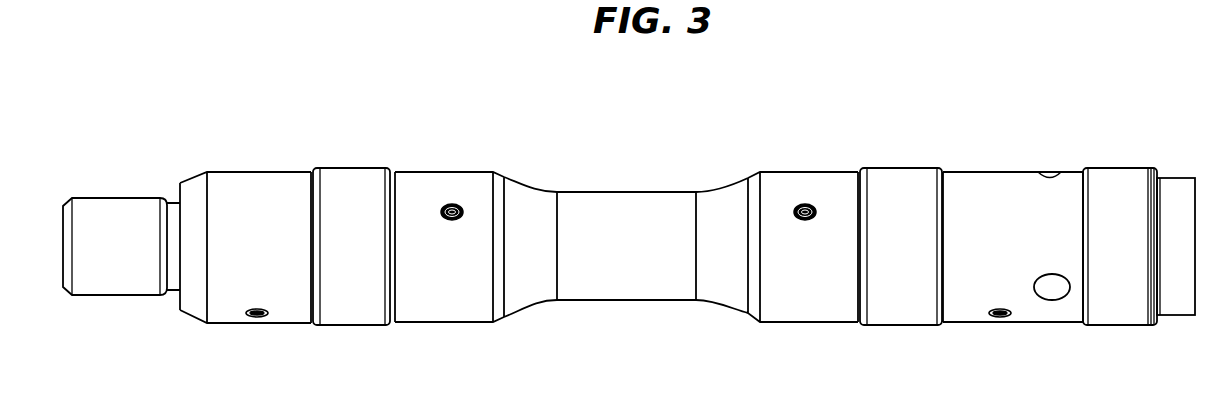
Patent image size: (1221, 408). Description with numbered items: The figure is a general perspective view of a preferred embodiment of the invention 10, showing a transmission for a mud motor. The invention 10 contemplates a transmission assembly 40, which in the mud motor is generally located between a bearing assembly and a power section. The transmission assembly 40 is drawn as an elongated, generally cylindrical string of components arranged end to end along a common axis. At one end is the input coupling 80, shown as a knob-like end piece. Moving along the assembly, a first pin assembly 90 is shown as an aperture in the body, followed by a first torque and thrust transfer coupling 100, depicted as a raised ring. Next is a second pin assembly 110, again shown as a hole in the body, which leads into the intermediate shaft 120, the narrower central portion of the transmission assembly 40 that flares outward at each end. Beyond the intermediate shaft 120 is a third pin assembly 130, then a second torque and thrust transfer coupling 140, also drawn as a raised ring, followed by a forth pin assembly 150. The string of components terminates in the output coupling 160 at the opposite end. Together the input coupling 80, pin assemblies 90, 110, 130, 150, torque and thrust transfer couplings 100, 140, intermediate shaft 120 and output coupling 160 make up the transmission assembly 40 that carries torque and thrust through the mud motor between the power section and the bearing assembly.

The invention 10 is at (1114, 123).
The transmission assembly 40 is at (595, 301).
The input coupling 80 is at (109, 196).
The first pin assembly 90 is at (257, 319).
The first torque and thrust transfer coupling 100 is at (349, 167).
The second pin assembly 110 is at (451, 221).
The intermediate shaft 120 is at (626, 191).
The third pin assembly 130 is at (805, 221).
The second torque and thrust transfer coupling 140 is at (897, 167).
The forth pin assembly 150 is at (1000, 320).
The output coupling 160 is at (1017, 171).